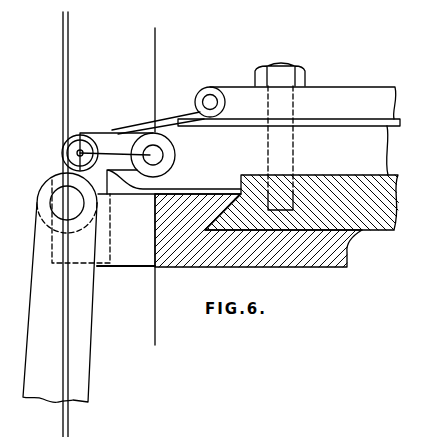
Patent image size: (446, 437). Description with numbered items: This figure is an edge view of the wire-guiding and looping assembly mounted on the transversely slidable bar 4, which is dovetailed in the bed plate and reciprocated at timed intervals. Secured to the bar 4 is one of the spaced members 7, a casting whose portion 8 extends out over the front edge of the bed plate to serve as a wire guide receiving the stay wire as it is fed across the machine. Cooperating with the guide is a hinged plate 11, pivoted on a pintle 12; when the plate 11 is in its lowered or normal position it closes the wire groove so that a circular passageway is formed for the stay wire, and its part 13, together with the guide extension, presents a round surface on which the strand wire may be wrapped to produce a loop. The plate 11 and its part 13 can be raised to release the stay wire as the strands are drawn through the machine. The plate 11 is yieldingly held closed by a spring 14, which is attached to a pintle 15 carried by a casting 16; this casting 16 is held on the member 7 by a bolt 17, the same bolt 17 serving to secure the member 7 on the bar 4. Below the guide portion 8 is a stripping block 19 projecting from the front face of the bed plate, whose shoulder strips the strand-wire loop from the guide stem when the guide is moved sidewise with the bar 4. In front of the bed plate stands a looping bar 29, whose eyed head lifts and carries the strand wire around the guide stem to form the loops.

The bar 4 is at (389, 222).
The members 7 is at (249, 156).
The wire guide portion 8 is at (109, 168).
The hinged plate 11 is at (107, 134).
The pintle 12 is at (156, 155).
The plate part 13 is at (80, 146).
The spring 14 is at (122, 130).
The pintle 15 is at (208, 99).
The casting 16 is at (303, 103).
The bolt 17 is at (282, 72).
The stripping block 19 is at (114, 230).
The looping bar 29 is at (83, 326).